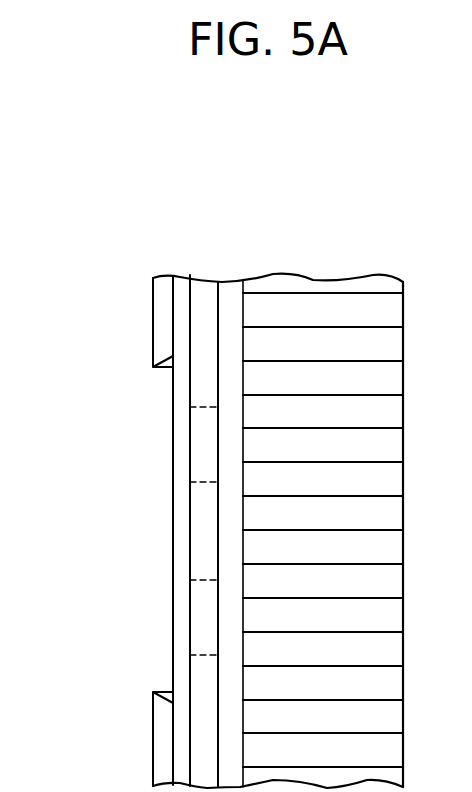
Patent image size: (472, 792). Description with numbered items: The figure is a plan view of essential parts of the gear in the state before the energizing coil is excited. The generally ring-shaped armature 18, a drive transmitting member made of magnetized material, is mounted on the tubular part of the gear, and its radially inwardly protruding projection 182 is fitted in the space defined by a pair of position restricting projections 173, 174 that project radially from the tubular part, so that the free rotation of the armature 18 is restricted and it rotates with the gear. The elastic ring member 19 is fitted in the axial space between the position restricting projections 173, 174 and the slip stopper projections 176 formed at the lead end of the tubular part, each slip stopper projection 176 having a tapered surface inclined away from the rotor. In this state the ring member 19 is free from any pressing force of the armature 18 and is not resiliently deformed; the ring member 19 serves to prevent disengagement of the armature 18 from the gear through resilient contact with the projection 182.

The armature 18 is at (204, 310).
The ring member 19 is at (176, 563).
The position restricting projection 173 is at (333, 315).
The position restricting projection 174 is at (198, 618).
The slip stopper projection 176 is at (160, 323).
The projection of the armature 182 is at (198, 516).